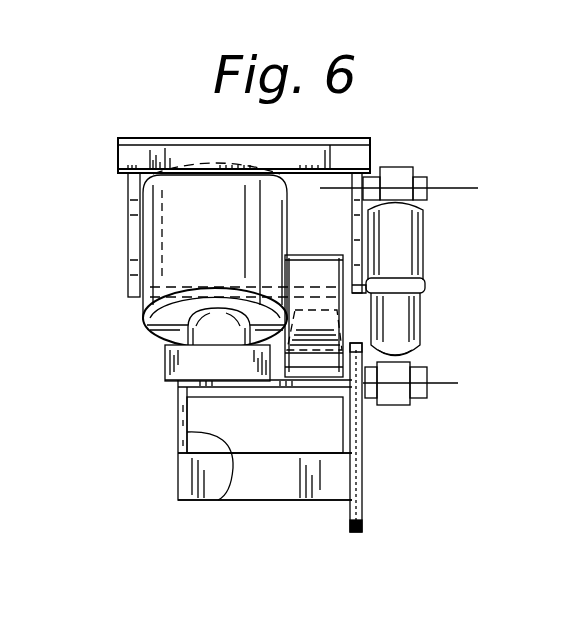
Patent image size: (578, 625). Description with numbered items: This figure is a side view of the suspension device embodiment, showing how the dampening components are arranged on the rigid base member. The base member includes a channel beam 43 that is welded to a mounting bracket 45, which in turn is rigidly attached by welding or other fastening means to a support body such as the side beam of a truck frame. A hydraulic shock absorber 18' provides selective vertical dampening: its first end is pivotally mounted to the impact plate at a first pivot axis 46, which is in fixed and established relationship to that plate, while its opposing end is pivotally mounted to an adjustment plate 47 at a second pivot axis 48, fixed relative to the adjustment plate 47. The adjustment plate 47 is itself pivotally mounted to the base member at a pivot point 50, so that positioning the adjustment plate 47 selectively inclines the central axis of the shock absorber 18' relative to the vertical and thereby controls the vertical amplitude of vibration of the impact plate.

The first pivot axis 46 is at (444, 188).
The hydraulic shock absorber 18' is at (437, 279).
The second pivot axis 48 is at (442, 365).
The pivot point 50 is at (363, 438).
The adjustment plate 47 is at (363, 483).
The channel beam 43 is at (218, 502).
The mounting bracket 45 is at (297, 485).